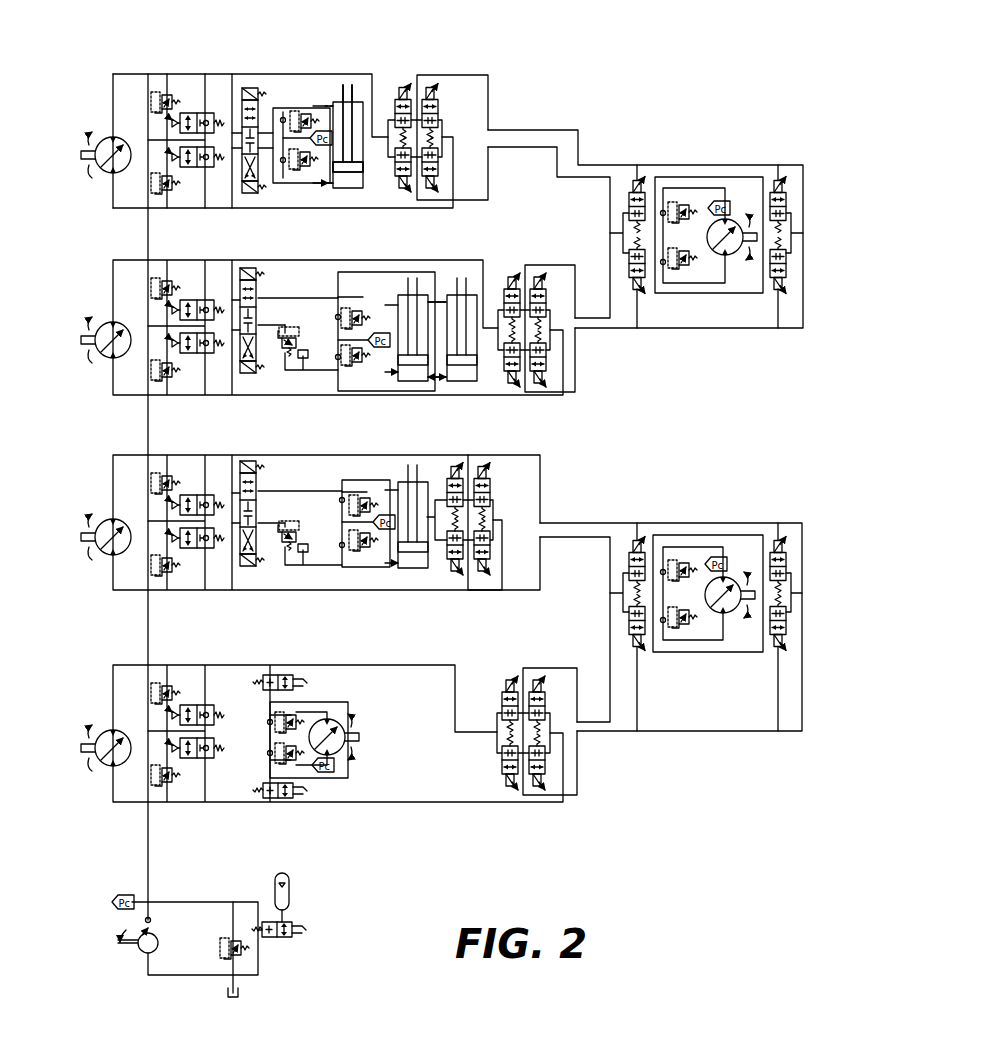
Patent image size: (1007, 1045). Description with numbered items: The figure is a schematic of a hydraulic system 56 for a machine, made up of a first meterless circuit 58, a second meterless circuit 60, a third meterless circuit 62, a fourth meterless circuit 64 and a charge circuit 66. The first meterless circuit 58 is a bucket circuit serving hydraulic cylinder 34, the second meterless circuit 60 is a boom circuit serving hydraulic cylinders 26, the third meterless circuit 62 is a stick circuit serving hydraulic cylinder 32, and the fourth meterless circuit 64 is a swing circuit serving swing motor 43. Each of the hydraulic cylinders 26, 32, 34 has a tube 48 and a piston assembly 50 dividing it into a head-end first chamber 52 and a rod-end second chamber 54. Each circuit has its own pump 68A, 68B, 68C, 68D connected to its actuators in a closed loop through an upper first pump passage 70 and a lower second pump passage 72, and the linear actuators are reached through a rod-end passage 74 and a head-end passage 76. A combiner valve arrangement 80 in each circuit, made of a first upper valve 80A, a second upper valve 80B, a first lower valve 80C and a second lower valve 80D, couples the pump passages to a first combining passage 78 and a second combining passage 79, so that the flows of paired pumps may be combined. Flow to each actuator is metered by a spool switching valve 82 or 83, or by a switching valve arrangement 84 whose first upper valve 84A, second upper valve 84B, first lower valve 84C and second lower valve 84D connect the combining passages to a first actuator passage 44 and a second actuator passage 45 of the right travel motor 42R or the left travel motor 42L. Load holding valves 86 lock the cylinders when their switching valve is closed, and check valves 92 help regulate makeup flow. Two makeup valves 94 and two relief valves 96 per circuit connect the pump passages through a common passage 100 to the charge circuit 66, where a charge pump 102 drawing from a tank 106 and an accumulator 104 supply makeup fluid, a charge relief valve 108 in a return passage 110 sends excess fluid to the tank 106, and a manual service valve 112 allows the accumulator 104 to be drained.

The hydraulic cylinders 26 is at (454, 272).
The hydraulic cylinder 32 is at (400, 465).
The hydraulic cylinder 34 is at (352, 86).
The right travel motor 42R is at (734, 256).
The left travel motor 42L is at (735, 615).
The swing motor 43 is at (335, 753).
The first actuator passage 44 is at (746, 177).
The second actuator passage 45 is at (735, 293).
The tube 48 is at (363, 150).
The piston assembly 50 is at (342, 88).
The first chamber 52 is at (347, 187).
The second chamber 54 is at (363, 115).
The hydraulic system 56 is at (665, 865).
The first meterless circuit 58 is at (683, 97).
The second meterless circuit 60 is at (658, 361).
The third meterless circuit 62 is at (626, 479).
The fourth meterless circuit 64 is at (687, 772).
The charge circuit 66 is at (340, 940).
The pump 68A is at (110, 172).
The pump 68B is at (110, 357).
The pump 68C is at (110, 557).
The pump 68D is at (110, 770).
The first pump passage 70 is at (271, 74).
The second pump passage 72 is at (120, 208).
The rod-end passage 74 is at (300, 108).
The head-end passage 76 is at (295, 183).
The first combining passage 78 is at (525, 130).
The second combining passage 79 is at (517, 147).
The combiner valve arrangement 80 is at (404, 64).
The first upper valve 80A is at (398, 98).
The second upper valve 80B is at (438, 102).
The first lower valve 80C is at (396, 174).
The second lower valve 80D is at (438, 165).
The spool switching valve 82 is at (245, 94).
The spool switching valve 83 is at (248, 268).
The switching valve arrangement 84 is at (766, 137).
The first upper valve 84A is at (633, 180).
The second upper valve 84B is at (789, 196).
The first lower valve 84C is at (633, 276).
The second lower valve 84D is at (788, 271).
The load holding valve 86 is at (296, 370).
The check valve 92 is at (283, 117).
The makeup valve 94 is at (192, 113).
The relief valve 96 is at (165, 88).
The common passage 100 is at (149, 894).
The charge pump 102 is at (156, 950).
The accumulator 104 is at (288, 885).
The tank 106 is at (240, 991).
The charge relief valve 108 is at (243, 951).
The return passage 110 is at (232, 925).
The manual service valve 112 is at (280, 938).